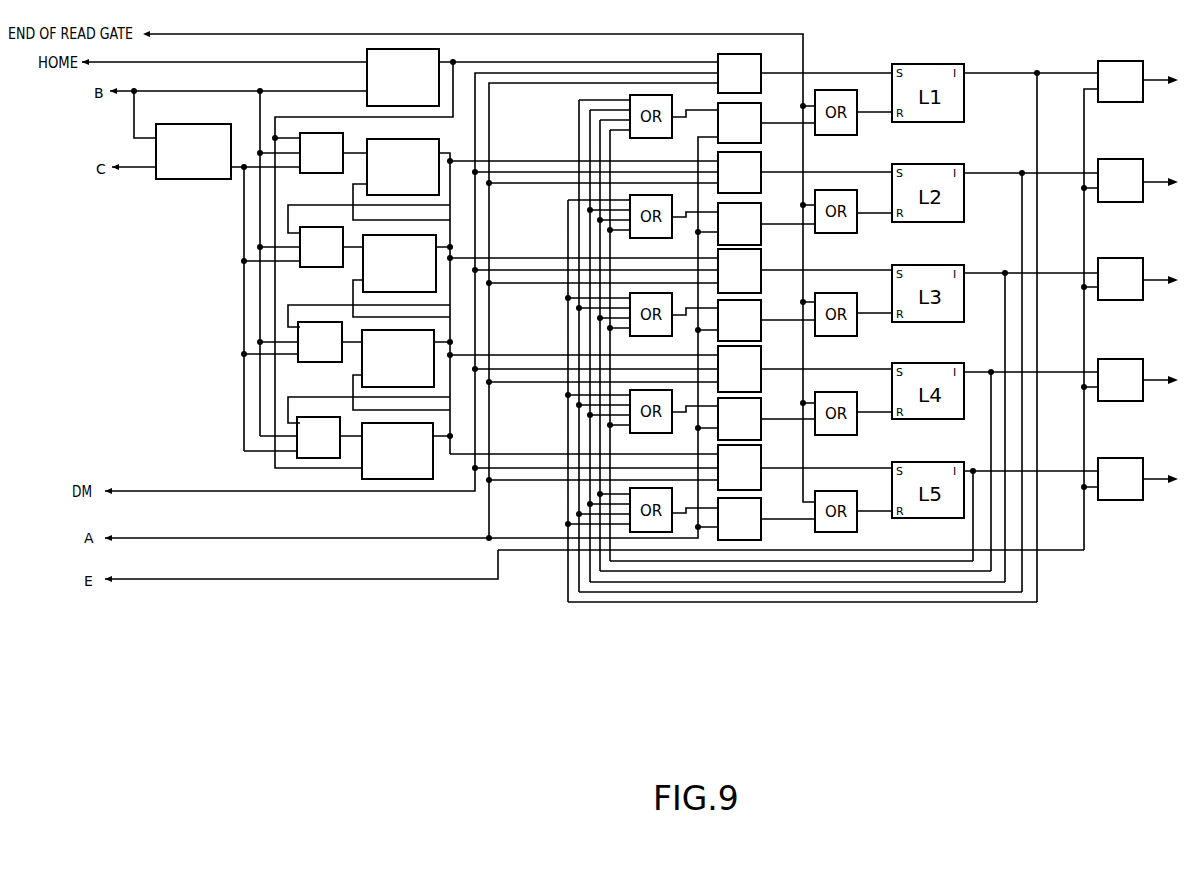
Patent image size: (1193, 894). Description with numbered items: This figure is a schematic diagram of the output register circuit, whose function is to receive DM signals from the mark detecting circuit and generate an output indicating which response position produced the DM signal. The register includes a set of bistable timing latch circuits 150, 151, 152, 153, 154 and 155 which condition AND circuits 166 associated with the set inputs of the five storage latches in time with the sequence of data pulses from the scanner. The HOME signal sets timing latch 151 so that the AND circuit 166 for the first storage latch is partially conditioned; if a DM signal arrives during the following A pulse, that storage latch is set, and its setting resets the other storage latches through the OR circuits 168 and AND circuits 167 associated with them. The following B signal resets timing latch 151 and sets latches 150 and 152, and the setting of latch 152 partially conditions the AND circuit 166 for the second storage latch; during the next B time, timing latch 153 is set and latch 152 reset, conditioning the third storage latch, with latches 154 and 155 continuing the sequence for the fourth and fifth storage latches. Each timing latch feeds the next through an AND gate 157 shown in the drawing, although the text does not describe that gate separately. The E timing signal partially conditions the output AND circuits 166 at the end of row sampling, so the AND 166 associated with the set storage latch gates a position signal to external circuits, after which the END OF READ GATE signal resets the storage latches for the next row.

The bistable latch circuit 150 is at (219, 180).
The timing latch 151 is at (440, 49).
The bistable latch circuit 152 is at (430, 139).
The timing latch 153 is at (363, 266).
The bistable latch circuit 154 is at (362, 361).
The bistable latch circuit 155 is at (393, 480).
The AND gates 157 is at (313, 173).
The AND circuit 166 is at (718, 55).
The AND circuit 167 is at (761, 108).
The OR circuit 168 is at (648, 614).